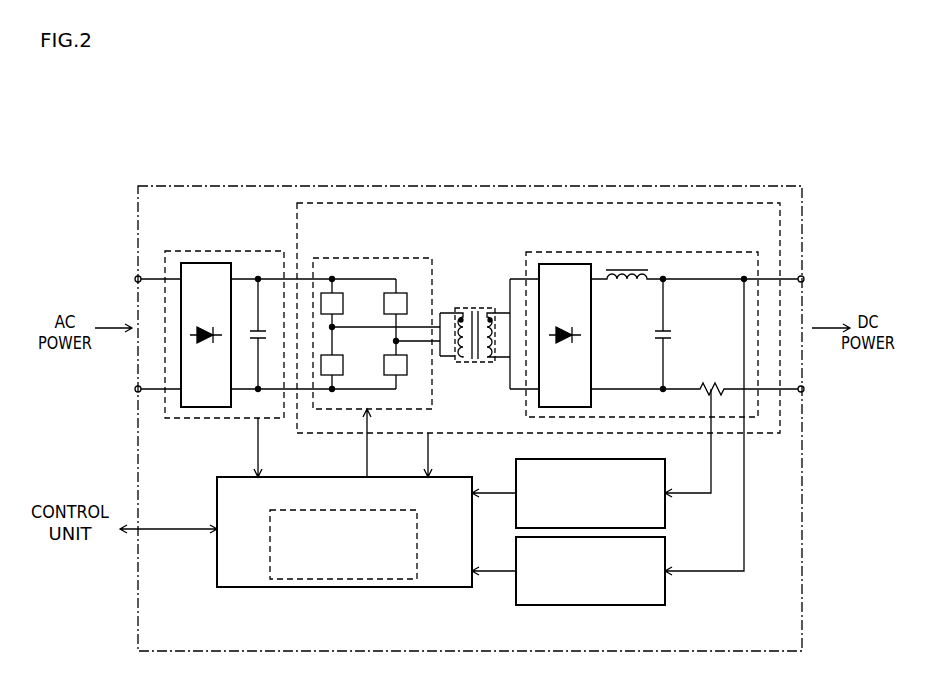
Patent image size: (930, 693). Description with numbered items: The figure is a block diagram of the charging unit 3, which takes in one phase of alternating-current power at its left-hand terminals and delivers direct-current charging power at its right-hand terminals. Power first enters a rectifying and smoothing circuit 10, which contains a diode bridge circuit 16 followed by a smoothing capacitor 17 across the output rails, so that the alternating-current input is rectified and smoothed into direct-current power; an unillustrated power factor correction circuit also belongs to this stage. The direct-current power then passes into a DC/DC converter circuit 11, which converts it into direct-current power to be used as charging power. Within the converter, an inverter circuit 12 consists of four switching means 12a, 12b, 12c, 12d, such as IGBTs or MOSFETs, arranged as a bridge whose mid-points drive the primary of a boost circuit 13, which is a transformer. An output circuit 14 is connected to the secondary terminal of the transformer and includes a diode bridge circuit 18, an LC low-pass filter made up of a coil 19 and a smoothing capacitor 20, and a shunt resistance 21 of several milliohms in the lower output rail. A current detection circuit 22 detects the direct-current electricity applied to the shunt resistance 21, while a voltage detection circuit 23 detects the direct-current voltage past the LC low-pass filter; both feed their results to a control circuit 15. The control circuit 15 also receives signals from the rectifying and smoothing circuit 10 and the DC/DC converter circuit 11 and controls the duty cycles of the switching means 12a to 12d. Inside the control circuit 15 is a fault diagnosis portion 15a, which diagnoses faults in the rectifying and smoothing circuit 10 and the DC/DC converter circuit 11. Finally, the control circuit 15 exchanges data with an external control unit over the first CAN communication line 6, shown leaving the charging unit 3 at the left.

The charging unit 3 is at (150, 160).
The first CAN communication line 6 is at (158, 533).
The rectifying and smoothing circuit 10 is at (254, 251).
The DC/DC converter circuit 11 is at (610, 203).
The inverter circuit 12 is at (398, 258).
The switching means 12a is at (343, 306).
The switching means 12b is at (343, 365).
The switching means 12c is at (418, 290).
The switching means 12d is at (407, 370).
The boost circuit 13 is at (486, 308).
The output circuit 14 is at (731, 252).
The control circuit 15 is at (344, 557).
The fault diagnosis portion 15a is at (289, 580).
The diode bridge circuit 16 is at (211, 263).
The smoothing capacitor 17 is at (268, 333).
The diode bridge circuit 18 is at (566, 264).
The coil 19 is at (614, 284).
The smoothing capacitor 20 is at (670, 331).
The shunt resistance 21 is at (712, 383).
The current detection circuit 22 is at (537, 459).
The voltage detection circuit 23 is at (544, 606).